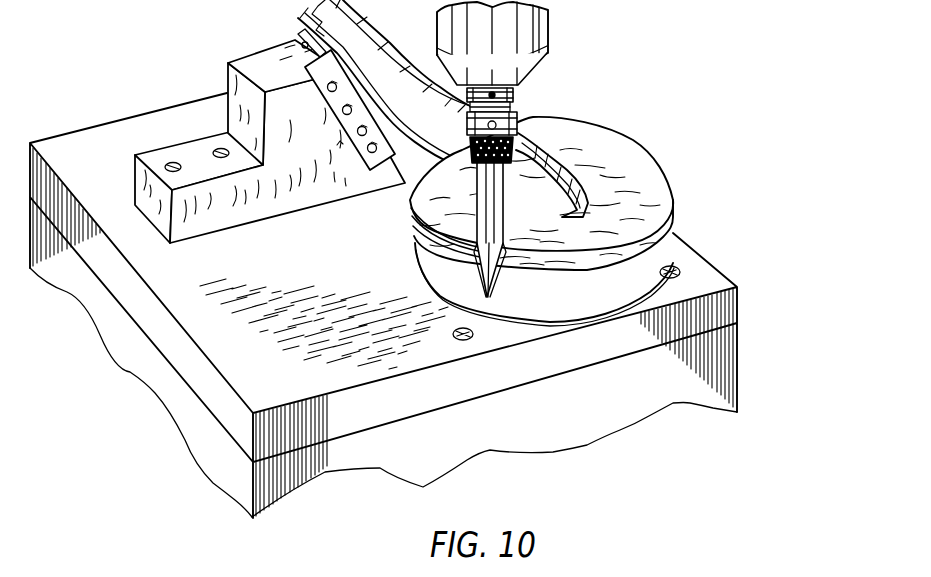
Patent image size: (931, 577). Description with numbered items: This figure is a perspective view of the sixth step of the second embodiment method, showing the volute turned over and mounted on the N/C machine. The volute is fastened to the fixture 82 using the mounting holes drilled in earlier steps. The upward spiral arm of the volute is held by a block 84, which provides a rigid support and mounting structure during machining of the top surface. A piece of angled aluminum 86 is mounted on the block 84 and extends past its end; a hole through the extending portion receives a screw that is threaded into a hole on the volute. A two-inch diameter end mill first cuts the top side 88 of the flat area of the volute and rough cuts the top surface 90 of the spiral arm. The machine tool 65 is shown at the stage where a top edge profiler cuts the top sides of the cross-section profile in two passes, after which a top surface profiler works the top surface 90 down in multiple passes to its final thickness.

The machine tool 65 is at (552, 22).
The fixture 82 is at (740, 303).
The block 84 is at (222, 213).
The angled aluminum 86 is at (332, 98).
The top side of the flat area 88 is at (410, 205).
The top surface of the spiral arm 90 is at (603, 153).